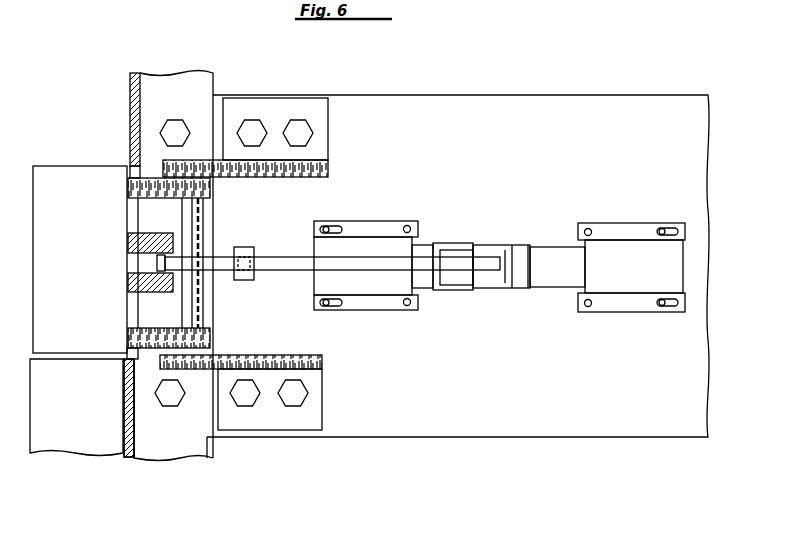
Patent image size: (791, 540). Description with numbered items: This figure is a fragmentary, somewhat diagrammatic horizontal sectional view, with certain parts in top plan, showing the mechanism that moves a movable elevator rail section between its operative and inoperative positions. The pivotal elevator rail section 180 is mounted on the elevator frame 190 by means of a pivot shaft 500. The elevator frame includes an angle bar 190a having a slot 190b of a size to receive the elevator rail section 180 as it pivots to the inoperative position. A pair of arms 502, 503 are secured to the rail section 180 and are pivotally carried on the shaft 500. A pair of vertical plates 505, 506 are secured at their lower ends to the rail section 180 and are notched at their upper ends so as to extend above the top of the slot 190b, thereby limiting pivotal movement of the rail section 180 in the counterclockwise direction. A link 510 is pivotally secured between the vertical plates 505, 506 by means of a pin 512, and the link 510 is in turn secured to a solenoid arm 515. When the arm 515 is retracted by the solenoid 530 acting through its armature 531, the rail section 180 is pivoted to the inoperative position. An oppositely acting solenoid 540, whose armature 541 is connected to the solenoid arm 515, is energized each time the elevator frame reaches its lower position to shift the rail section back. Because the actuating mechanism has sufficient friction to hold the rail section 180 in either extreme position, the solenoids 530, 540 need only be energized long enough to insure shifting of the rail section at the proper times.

The elevator frame 190 is at (141, 72).
The angle bar 190a is at (122, 440).
The slot 190b is at (122, 362).
The elevator rail section 180 is at (55, 175).
The pivot shaft 500 is at (197, 302).
The arm 502 is at (206, 337).
The arm 503 is at (200, 188).
The vertical plate 505 is at (128, 282).
The vertical plate 506 is at (128, 240).
The link 510 is at (217, 262).
The pin 512 is at (157, 265).
The solenoid arm 515 is at (268, 258).
The solenoid 530 is at (629, 287).
The armature 531 is at (553, 280).
The oppositely acting solenoid 540 is at (385, 287).
The armature 541 is at (425, 247).